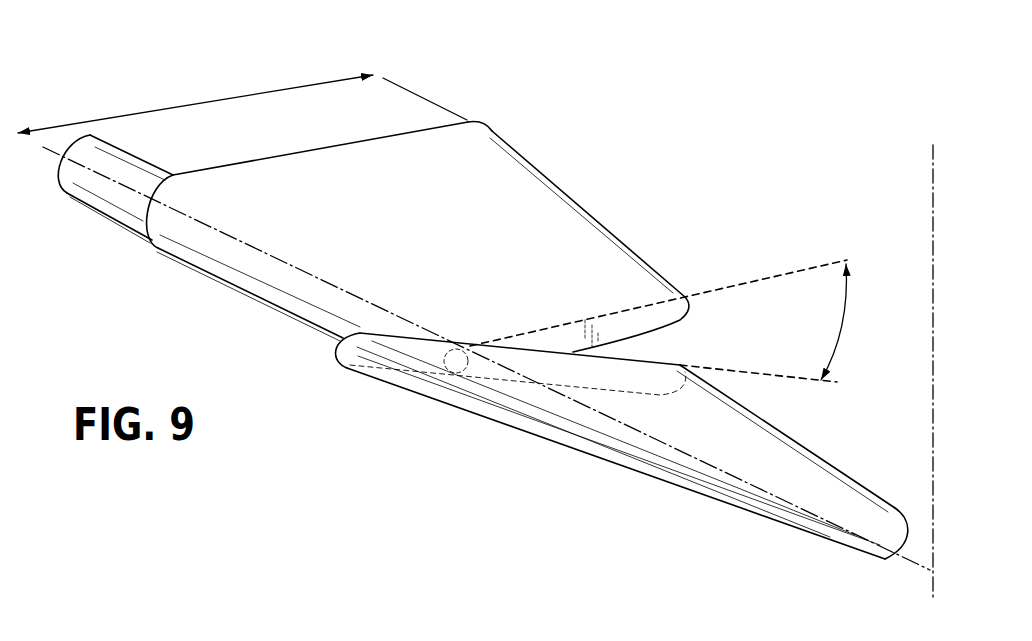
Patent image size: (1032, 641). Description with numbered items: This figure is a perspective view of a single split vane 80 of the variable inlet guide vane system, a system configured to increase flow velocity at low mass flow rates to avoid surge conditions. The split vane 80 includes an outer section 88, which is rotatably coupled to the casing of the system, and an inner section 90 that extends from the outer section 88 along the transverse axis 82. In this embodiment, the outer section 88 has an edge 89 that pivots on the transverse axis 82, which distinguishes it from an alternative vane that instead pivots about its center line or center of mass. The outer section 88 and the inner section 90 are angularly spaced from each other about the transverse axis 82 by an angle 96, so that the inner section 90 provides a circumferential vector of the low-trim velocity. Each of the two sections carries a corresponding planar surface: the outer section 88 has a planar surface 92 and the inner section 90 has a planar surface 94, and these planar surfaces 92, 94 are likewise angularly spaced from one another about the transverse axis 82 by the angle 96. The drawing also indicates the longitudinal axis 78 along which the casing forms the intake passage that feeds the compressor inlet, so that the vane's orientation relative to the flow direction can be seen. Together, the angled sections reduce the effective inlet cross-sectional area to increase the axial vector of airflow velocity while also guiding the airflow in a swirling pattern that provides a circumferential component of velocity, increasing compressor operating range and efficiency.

The longitudinal axis 78 is at (931, 222).
The split vane 80 is at (97, 100).
The transverse axis 82 is at (908, 558).
The outer section 88 is at (595, 218).
The edge 89 is at (113, 215).
The inner section 90 is at (832, 484).
The planar surface 92 is at (478, 249).
The planar surface 94 is at (725, 448).
The angle 96 is at (840, 314).